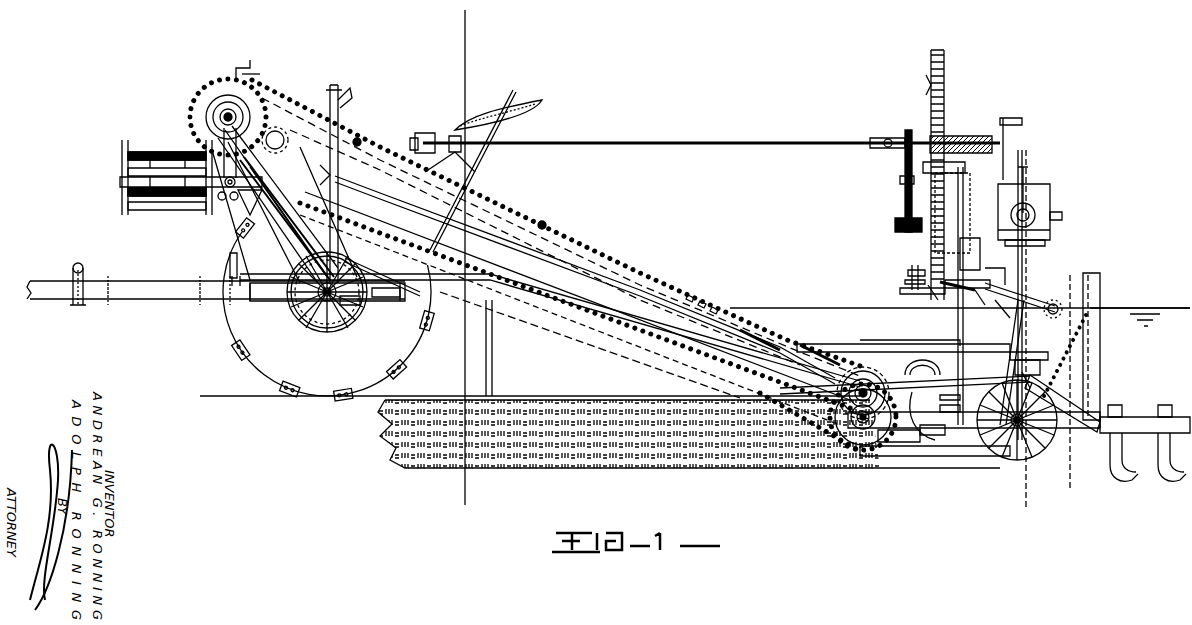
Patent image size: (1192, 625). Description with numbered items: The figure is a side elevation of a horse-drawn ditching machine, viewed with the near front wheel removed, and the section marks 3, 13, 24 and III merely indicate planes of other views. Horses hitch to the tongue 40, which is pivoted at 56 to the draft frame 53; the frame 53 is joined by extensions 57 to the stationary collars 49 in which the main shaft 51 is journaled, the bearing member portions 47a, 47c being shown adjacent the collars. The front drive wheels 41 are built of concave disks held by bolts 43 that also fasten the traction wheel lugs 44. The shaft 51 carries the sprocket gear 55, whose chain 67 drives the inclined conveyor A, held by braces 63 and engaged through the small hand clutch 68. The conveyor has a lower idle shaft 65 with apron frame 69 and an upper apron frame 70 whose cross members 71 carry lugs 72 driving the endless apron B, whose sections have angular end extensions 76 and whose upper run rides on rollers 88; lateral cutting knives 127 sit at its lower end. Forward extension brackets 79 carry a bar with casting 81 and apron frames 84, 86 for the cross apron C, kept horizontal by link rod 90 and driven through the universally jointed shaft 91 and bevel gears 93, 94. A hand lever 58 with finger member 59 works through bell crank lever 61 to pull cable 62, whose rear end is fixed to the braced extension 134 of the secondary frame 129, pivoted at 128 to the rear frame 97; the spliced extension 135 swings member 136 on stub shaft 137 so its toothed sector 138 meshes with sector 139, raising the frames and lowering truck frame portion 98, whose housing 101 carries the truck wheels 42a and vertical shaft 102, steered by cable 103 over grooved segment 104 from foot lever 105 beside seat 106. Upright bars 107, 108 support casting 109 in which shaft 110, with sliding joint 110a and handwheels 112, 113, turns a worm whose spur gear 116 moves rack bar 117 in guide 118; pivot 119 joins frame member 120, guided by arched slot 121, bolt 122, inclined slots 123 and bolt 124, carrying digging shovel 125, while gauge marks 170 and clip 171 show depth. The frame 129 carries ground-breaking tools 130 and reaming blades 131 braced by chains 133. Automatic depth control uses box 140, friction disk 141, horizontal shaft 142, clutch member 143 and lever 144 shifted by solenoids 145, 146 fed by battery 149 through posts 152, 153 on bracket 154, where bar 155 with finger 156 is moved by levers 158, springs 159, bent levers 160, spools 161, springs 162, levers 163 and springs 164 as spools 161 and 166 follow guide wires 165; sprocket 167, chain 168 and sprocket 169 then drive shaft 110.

The section line 3 is at (415, 22).
The section line 13 is at (1083, 283).
The section line 24 is at (1026, 165).
The tongue 40 is at (78, 298).
The front drive wheels 41 is at (232, 322).
The truck wheels 42a is at (1000, 460).
The bolts 43 is at (294, 392).
The wheel lugs 44 is at (340, 394).
The tongue beam 47a is at (216, 296).
The bracket 47c is at (255, 278).
The stationary collar 49 is at (316, 304).
The main shaft 51 is at (326, 305).
The draft frame 53 is at (385, 300).
The sprocket gear 55 is at (348, 305).
The pivot connection 56 is at (306, 302).
The extensions 57 is at (282, 302).
The hand lever 58 is at (338, 92).
The finger member 59 is at (346, 96).
The bell crank lever 61 is at (345, 258).
The cable 62 is at (487, 310).
The braces 63 is at (318, 262).
The lower idle shaft 65 is at (860, 445).
The chain 67 is at (233, 276).
The hand clutch 68 is at (252, 72).
The circular apron frame 69 is at (850, 440).
The circular apron frame 70 is at (214, 105).
The cross members 71 is at (240, 115).
The lugs 72 is at (285, 110).
The angular end extension 76 is at (716, 308).
The extension brackets 79 is at (222, 150).
The casting 81 is at (222, 188).
The circular apron frame 84 is at (252, 202).
The apron frame 86 is at (165, 212).
The rollers 88 is at (358, 140).
The link rod 90 is at (302, 230).
The universally jointed shaft 91 is at (275, 136).
The bevel gear 93 is at (234, 200).
The bevel gear 94 is at (220, 200).
The frame 97 is at (965, 428).
The frame portion 98 is at (1042, 362).
The housing 101 is at (1030, 352).
The vertical shaft 102 is at (1030, 282).
The cable 103 is at (830, 344).
The grooved segment 104 is at (1066, 356).
The foot lever 105 is at (425, 132).
The seat 106 is at (505, 105).
The upright bars 107 is at (960, 374).
The upright bars 108 is at (1010, 332).
The casting 109 is at (965, 135).
The shaft 110 is at (822, 141).
The universal sliding joint 110a is at (885, 138).
The handwheel 112 is at (1012, 126).
The handwheel 113 is at (455, 135).
The spur gear 116 is at (930, 176).
The rack bar 117 is at (925, 174).
The guide 118 is at (923, 165).
The pivot 119 is at (960, 398).
The frame member 120 is at (960, 413).
The arched slot 121 is at (940, 360).
The bolt 122 is at (925, 360).
The inclined slots 123 is at (937, 425).
The bolt 124 is at (930, 436).
The digging shovel 125 is at (885, 444).
The cutting knives 127 is at (822, 432).
The pivot 128 is at (1025, 445).
The secondary frame 129 is at (1140, 418).
The ground-breaking tools 130 is at (1160, 470).
The reaming blades 131 is at (1098, 292).
The chains 133 is at (1050, 380).
The braced extension 134 is at (1062, 400).
The spliced extension 135 is at (872, 384).
The member 136 is at (865, 378).
The stub shaft 137 is at (852, 393).
The toothed sector 138 is at (852, 412).
The toothed sector 139 is at (318, 170).
The box 140 is at (1050, 226).
The beveled friction disk 141 is at (1046, 243).
The horizontal shaft 142 is at (1062, 216).
The friction clutch member 143 is at (1050, 212).
The lever 144 is at (1030, 175).
The solenoid 145 is at (1045, 190).
The solenoid 146 is at (1050, 200).
The battery 149 is at (980, 250).
The binding post 152 is at (918, 266).
The binding post 153 is at (912, 268).
The bracket member 154 is at (906, 274).
The bar 155 is at (925, 291).
The finger 156 is at (906, 282).
The levers 158 is at (935, 292).
The springs 159 is at (902, 291).
The bent levers 160 is at (988, 276).
The spools 161 is at (980, 300).
The pulling springs 162 is at (935, 295).
The levers 163 is at (1000, 310).
The pulling springs 164 is at (1020, 295).
The guide wires 165 is at (1130, 308).
The spools 166 is at (1052, 314).
The sprocket gear 167 is at (895, 228).
The chain 168 is at (905, 181).
The sprocket gear 169 is at (908, 130).
The gauge marks 170 is at (947, 62).
The gauge clip 171 is at (947, 105).
The inclined conveyor A is at (545, 250).
The endless apron B is at (655, 276).
The apron C is at (135, 152).
The section III is at (980, 140).